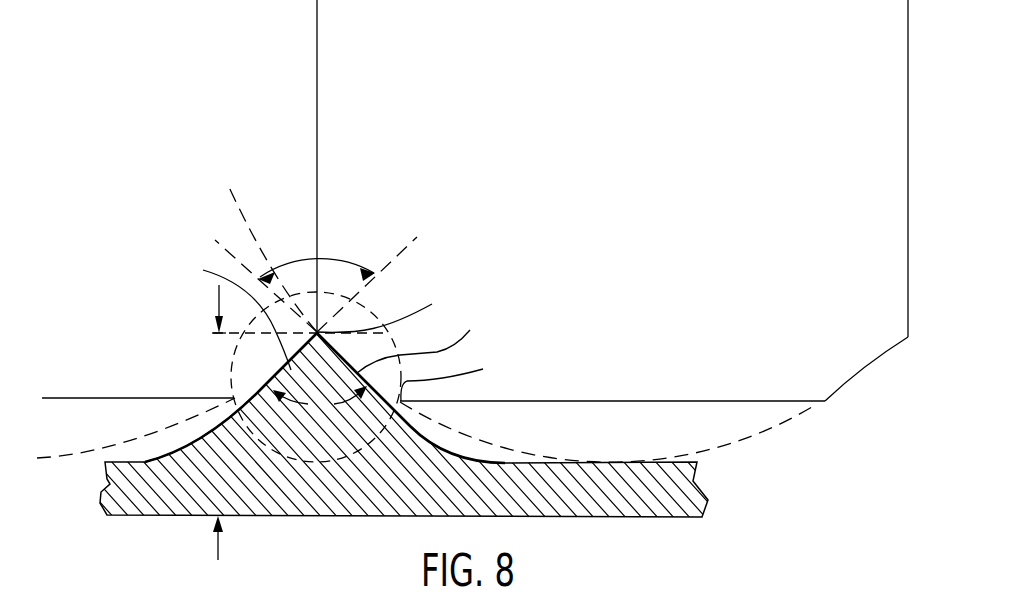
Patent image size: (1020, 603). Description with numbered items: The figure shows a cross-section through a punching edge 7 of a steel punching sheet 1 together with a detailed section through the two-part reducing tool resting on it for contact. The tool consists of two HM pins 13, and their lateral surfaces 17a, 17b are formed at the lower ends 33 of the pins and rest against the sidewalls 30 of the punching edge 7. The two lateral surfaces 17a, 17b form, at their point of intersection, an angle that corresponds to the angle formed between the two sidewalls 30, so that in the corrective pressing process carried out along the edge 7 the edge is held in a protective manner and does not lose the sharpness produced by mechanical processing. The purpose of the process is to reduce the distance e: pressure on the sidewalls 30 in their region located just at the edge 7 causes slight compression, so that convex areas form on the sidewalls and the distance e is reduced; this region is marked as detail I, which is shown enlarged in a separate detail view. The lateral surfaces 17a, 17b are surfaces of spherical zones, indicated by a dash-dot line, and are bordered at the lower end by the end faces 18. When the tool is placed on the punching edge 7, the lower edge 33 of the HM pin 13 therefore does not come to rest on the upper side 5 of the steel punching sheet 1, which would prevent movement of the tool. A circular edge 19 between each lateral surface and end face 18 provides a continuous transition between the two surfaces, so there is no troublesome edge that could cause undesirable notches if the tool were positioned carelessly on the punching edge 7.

The HM pin 13 is at (640, 70).
The lower end of HM pin 33 is at (665, 280).
The lateral surface 17b is at (238, 277).
The lateral surface 17a is at (436, 342).
The punching edge 7 is at (385, 284).
The sidewall 30 is at (268, 370).
The upper side of the steel punching sheet 5 is at (528, 463).
The end face 18 is at (660, 401).
The circular edge 19 is at (825, 400).
The steel punching sheet 1 is at (730, 489).
The detail I is at (446, 379).
The distance e is at (286, 311).